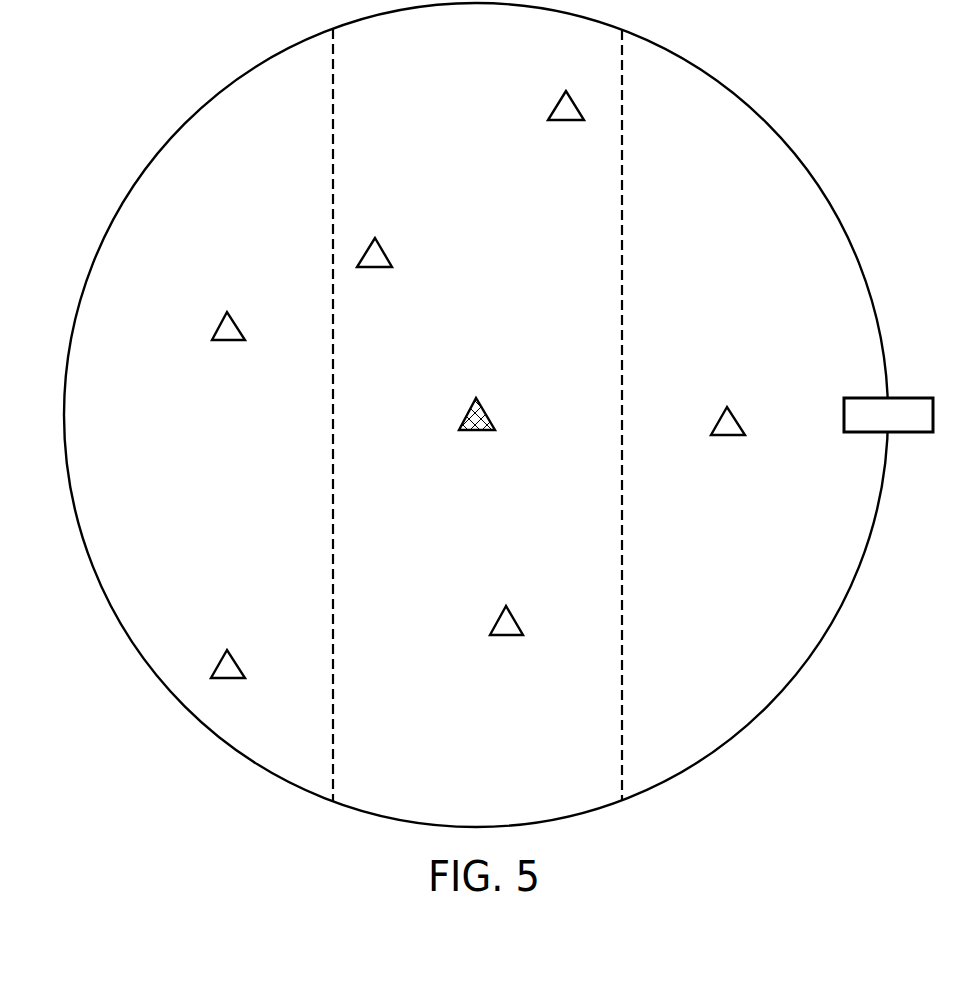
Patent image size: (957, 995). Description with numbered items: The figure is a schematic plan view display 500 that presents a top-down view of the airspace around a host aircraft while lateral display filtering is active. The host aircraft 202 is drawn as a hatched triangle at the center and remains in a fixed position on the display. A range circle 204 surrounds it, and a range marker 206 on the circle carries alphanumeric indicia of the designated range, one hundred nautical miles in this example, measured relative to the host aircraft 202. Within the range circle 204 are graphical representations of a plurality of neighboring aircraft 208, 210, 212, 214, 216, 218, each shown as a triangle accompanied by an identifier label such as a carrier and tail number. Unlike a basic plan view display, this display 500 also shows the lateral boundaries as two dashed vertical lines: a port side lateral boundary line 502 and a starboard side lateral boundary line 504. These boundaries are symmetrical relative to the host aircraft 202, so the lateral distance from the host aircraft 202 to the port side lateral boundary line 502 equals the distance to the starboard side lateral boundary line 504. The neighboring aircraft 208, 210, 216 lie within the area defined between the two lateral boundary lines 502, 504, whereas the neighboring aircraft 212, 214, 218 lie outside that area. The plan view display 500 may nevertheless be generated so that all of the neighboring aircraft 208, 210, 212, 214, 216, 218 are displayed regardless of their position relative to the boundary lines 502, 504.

The plan view display 500 is at (124, 99).
The range circle 204 is at (786, 146).
The range marker 206 is at (916, 398).
The host aircraft 202 is at (487, 413).
The neighboring aircraft 208 is at (555, 105).
The neighboring aircraft 210 is at (383, 252).
The neighboring aircraft 212 is at (238, 325).
The neighboring aircraft 214 is at (738, 420).
The neighboring aircraft 216 is at (517, 620).
The neighboring aircraft 218 is at (238, 665).
The port side lateral boundary line 502 is at (331, 232).
The starboard side lateral boundary line 504 is at (624, 232).